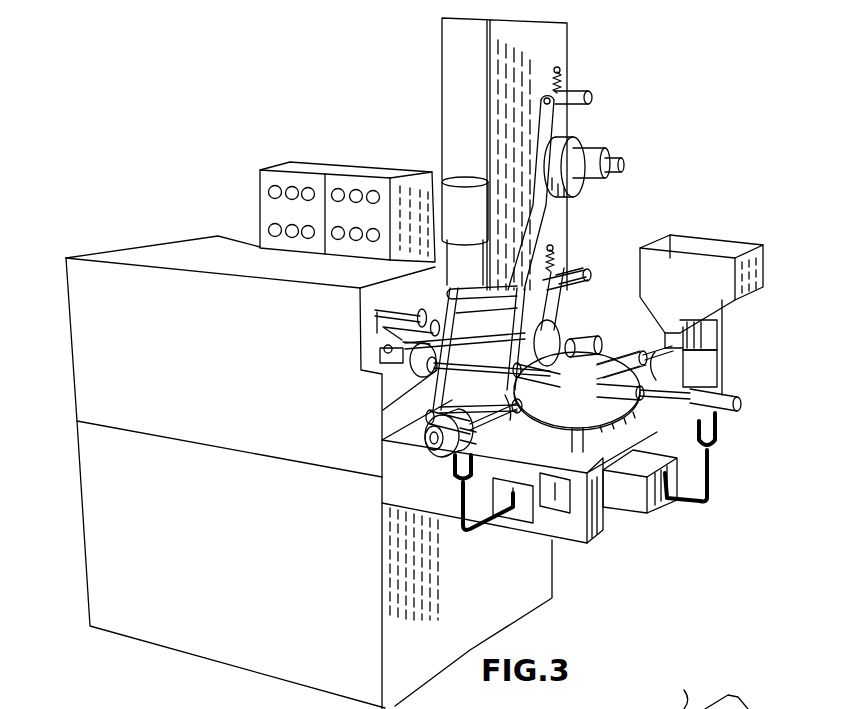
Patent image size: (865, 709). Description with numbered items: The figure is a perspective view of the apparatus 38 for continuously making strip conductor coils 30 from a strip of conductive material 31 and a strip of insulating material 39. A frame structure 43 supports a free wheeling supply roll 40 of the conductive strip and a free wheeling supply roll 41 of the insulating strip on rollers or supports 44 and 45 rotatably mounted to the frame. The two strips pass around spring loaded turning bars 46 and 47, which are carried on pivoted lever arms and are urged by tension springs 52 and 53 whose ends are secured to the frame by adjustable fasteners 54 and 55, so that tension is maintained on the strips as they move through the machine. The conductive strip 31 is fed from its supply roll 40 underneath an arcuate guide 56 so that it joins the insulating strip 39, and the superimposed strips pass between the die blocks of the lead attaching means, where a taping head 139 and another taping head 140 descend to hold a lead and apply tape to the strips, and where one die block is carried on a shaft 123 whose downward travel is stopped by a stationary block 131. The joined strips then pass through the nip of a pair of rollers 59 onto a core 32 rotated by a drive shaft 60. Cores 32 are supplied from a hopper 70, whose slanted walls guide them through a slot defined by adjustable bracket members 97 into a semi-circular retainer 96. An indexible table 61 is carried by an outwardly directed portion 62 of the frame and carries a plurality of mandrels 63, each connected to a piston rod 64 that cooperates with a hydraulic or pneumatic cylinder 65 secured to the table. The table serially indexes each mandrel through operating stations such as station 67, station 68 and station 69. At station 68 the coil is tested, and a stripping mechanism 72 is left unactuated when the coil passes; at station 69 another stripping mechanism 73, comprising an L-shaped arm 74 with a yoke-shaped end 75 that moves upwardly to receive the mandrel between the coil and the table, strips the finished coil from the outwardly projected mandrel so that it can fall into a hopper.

The strip conductor coil 30 is at (433, 461).
The strip of conductive material 31 is at (537, 152).
The core 32 is at (429, 446).
The apparatus 38 is at (706, 110).
The strip of insulating material 39 is at (572, 305).
The supply roll 40 is at (582, 144).
The supply roll 41 is at (587, 333).
The frame structure 43 is at (105, 566).
The roller or support 44 is at (613, 159).
The roller or support 45 is at (602, 356).
The spring loaded turning bar 46 is at (590, 92).
The spring loaded turning bar 47 is at (578, 270).
The tension spring 52 is at (553, 82).
The tension spring 53 is at (548, 272).
The adjustable fastener 54 is at (560, 67).
The adjustable fastener 55 is at (556, 250).
The arcuate guide 56 is at (524, 258).
The roller 59 is at (570, 373).
The drive shaft 60 is at (390, 360).
The indexible table 61 is at (598, 410).
The outwardly directed portion 62 is at (575, 536).
The mandrel 63 is at (470, 428).
The piston rod 64 is at (652, 364).
The hydraulic or pneumatic cylinder 65 is at (600, 399).
The operating station 67 is at (391, 345).
The operating station 68 is at (403, 439).
The operating station 69 is at (733, 424).
The hopper 70 is at (755, 270).
The stripping mechanism 72 is at (457, 554).
The stripping mechanism 73 is at (714, 498).
The L-shaped arm 74 is at (712, 478).
The yoke-shaped end 75 is at (720, 433).
The semi-circular retainer 96 is at (708, 346).
The adjustable bracket member 97 is at (668, 328).
The shaft 123 is at (445, 380).
The stationary block 131 is at (515, 410).
The movable taping head 139 is at (452, 334).
The taping head 140 is at (418, 313).